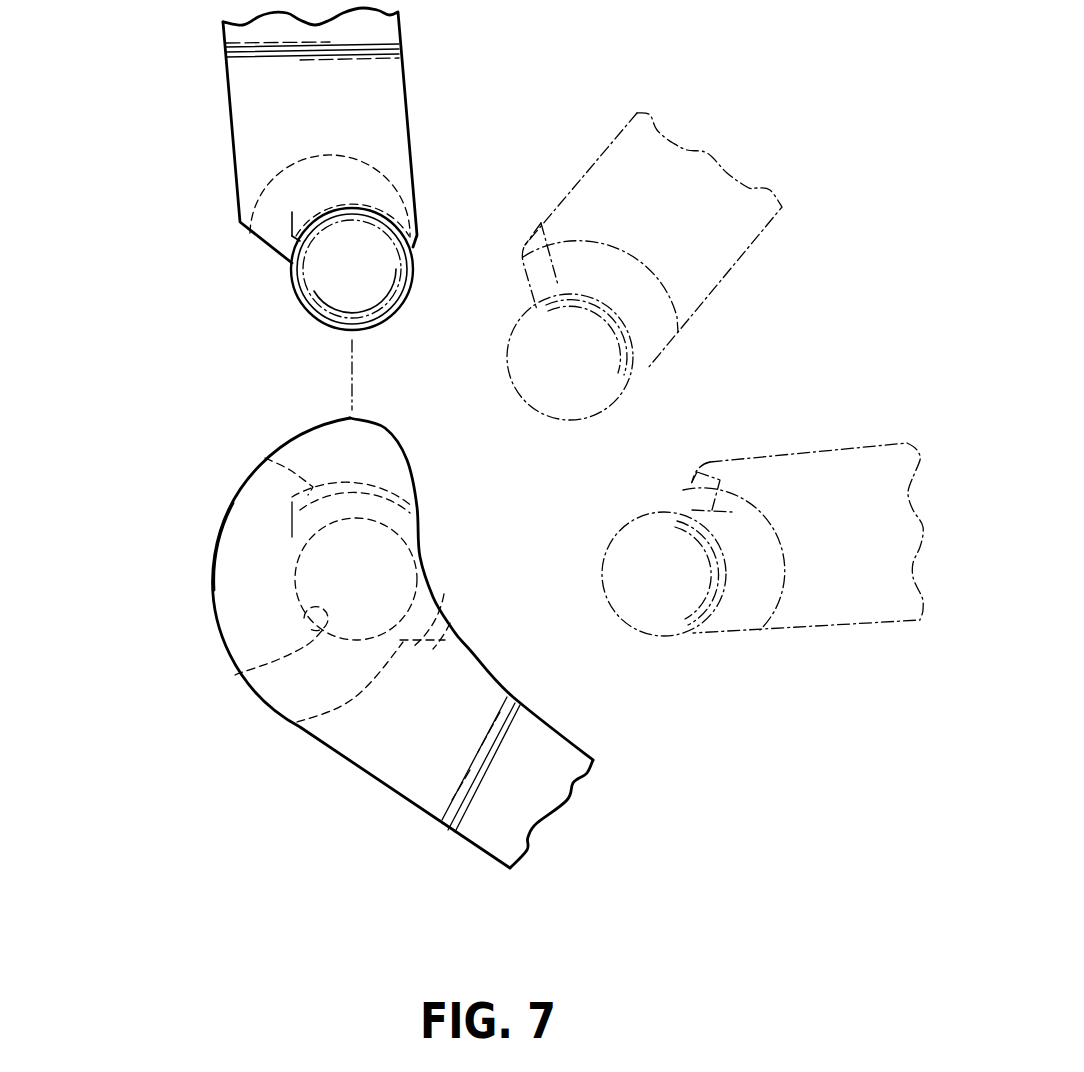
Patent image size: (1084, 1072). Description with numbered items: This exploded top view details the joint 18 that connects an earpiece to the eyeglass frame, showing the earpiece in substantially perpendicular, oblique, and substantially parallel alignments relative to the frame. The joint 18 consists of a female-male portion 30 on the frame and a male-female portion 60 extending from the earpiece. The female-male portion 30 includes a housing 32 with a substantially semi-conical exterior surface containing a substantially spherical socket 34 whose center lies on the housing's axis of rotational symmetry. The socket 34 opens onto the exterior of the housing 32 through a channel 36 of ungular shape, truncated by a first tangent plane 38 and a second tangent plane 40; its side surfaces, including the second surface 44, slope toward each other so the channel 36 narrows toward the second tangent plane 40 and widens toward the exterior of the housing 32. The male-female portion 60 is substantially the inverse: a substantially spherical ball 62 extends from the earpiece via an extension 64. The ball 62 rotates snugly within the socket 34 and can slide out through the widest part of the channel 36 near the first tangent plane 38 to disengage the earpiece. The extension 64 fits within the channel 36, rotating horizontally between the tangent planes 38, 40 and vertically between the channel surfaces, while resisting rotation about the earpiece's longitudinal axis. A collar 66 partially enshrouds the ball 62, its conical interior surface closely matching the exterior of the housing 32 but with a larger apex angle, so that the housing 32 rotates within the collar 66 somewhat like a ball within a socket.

The joint 18 is at (150, 371).
The female-male portion 30 is at (255, 609).
The housing 32 is at (215, 545).
The socket 34 is at (235, 677).
The channel 36 is at (265, 458).
The first tangent plane 38 is at (297, 722).
The second tangent plane 40 is at (292, 535).
The second surface 44 is at (380, 476).
The male-female portion 60 is at (280, 305).
The ball 62 is at (323, 313).
The extension 64 is at (290, 236).
The collar 66 is at (417, 210).